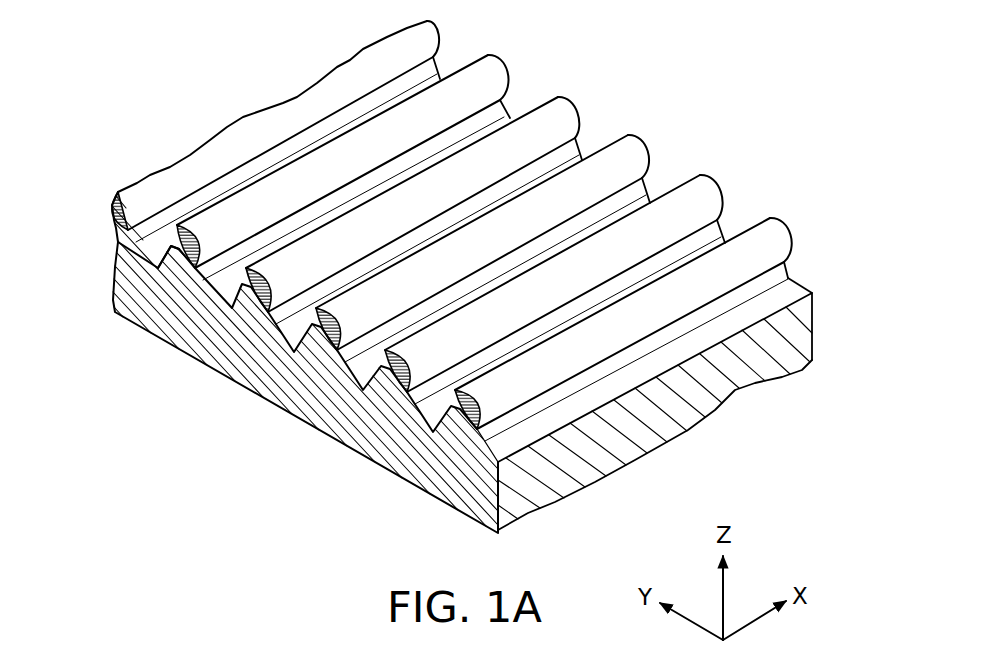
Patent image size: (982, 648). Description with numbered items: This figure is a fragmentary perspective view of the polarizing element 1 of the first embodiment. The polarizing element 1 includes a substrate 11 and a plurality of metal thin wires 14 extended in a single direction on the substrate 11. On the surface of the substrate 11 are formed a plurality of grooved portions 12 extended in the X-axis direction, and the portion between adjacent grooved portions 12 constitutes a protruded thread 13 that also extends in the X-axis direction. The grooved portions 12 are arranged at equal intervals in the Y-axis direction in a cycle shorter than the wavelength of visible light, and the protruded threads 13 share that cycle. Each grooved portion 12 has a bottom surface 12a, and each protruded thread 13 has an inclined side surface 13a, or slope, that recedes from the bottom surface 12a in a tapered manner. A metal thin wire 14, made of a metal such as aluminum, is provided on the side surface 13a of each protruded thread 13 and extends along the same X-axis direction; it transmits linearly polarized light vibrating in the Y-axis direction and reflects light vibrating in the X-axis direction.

The polarizing element 1 is at (462, 280).
The substrate 11 is at (727, 381).
The grooved portion 12 is at (152, 251).
The bottom surface 12a is at (530, 433).
The protruded thread 13 is at (153, 280).
The side surface 13a is at (175, 270).
The metal thin wire 14 is at (600, 343).